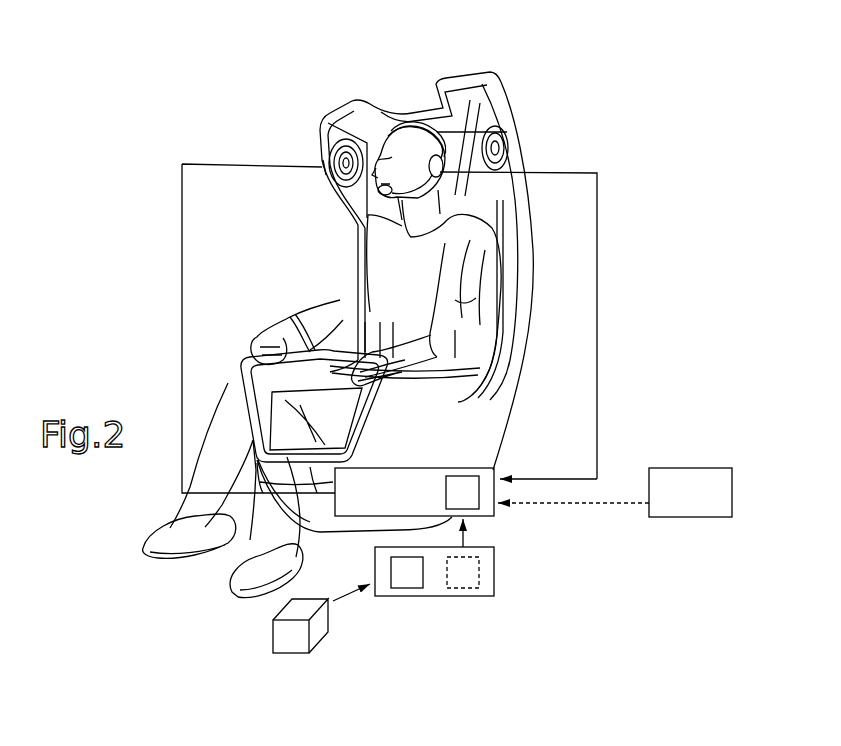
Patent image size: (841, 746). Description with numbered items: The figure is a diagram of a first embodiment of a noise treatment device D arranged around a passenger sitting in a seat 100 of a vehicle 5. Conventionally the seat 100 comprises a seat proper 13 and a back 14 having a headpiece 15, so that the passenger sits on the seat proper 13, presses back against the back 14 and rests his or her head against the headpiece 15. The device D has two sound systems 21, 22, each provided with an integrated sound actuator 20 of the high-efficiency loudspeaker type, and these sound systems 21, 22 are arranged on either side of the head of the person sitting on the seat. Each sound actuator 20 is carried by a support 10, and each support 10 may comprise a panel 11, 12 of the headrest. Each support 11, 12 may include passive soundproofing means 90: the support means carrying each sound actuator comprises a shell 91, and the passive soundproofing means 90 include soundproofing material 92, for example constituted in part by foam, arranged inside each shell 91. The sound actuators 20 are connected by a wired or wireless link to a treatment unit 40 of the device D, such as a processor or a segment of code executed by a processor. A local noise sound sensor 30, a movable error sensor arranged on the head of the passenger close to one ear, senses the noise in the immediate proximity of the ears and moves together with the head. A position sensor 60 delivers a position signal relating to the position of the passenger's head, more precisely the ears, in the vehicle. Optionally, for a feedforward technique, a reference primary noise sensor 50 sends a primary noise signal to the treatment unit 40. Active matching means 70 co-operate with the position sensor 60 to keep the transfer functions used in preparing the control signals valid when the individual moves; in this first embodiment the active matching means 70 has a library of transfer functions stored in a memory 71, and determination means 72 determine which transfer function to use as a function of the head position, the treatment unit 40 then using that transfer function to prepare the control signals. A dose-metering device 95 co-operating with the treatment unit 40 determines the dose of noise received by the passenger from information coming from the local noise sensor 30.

The seat 100 is at (573, 37).
The support 10 is at (313, 108).
The panel of a headrest 11 is at (320, 132).
The panel of a headrest 12 is at (493, 188).
The seat proper 13 is at (290, 314).
The back 14 is at (552, 328).
The headpiece 15 is at (305, 227).
The sound actuator 20 is at (343, 130).
The sound system 21 is at (293, 152).
The sound system 22 is at (524, 115).
The local noise sound sensor 30 is at (413, 128).
The treatment unit 40 is at (396, 503).
The reference primary noise sensor 50 is at (676, 505).
The position sensor 60 is at (320, 622).
The active matching means 70 is at (494, 564).
The memory 71 is at (410, 588).
The determination means 72 is at (463, 588).
The passive soundproofing means 90 is at (312, 180).
The shell 91 is at (323, 195).
The soundproofing material 92 is at (340, 228).
The dose-metering device 95 is at (463, 476).
The vehicle 5 is at (684, 202).
The noise treatment device D is at (222, 88).